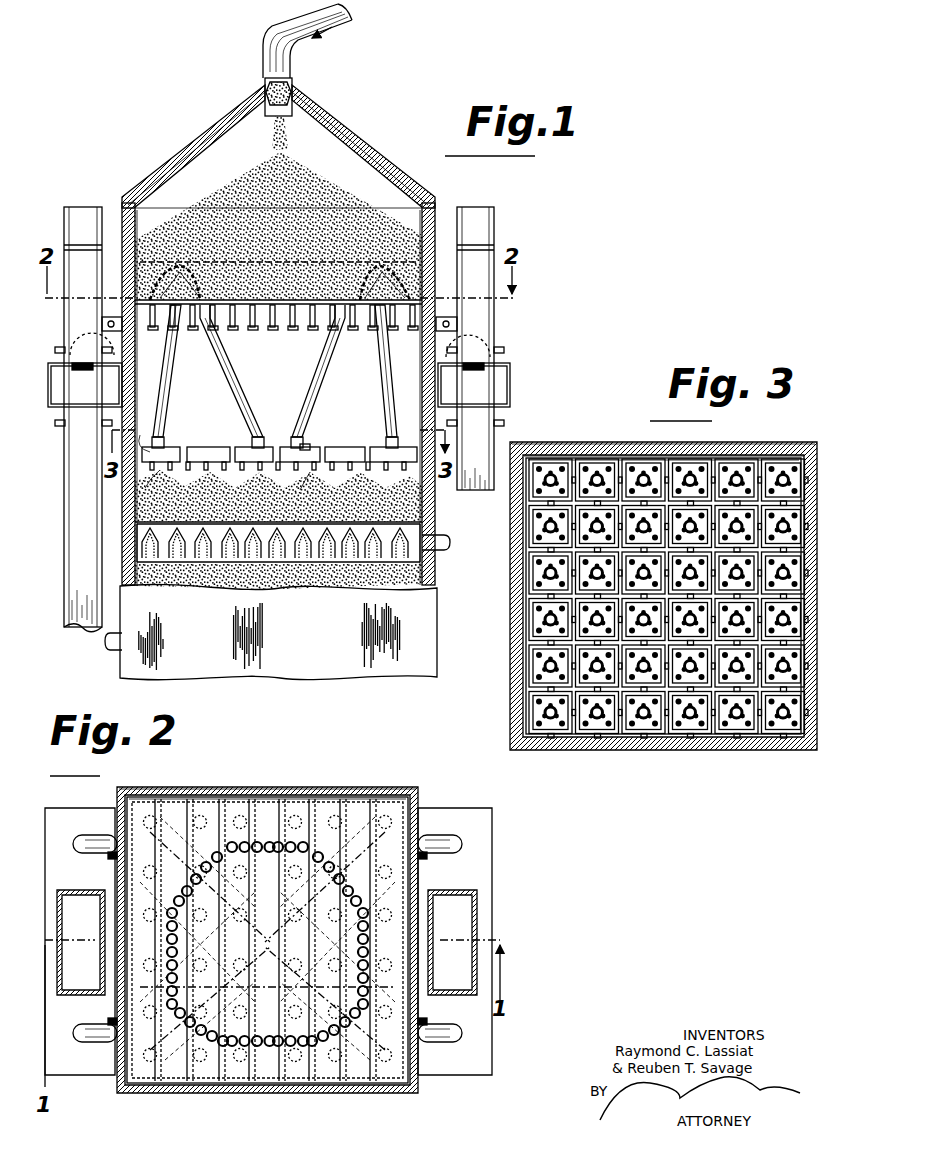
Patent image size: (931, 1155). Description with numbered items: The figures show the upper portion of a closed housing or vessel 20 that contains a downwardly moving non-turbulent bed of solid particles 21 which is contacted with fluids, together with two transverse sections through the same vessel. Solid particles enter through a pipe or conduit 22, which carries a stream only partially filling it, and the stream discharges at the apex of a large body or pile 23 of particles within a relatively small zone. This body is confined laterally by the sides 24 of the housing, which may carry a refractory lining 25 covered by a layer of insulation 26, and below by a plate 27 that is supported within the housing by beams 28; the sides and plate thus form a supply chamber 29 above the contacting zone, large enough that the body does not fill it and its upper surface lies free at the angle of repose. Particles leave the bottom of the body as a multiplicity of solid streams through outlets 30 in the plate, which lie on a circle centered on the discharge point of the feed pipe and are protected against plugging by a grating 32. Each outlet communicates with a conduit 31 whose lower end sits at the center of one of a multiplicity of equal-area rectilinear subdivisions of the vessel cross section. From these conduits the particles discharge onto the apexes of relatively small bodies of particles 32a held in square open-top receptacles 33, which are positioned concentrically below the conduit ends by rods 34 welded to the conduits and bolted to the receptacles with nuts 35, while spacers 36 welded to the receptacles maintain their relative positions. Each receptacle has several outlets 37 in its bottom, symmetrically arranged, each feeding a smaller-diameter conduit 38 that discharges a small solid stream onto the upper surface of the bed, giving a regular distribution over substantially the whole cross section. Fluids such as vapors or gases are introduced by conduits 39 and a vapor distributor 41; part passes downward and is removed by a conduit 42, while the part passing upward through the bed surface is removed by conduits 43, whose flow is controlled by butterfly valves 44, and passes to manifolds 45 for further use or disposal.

In FIG. 1, the housing 20 is at (304, 630).
In FIG. 3, the housing 20 is at (814, 437).
In FIG. 2, the housing 20 is at (325, 1096).
In FIG. 1, the bed of solid particles 21 is at (405, 506).
In FIG. 3, the bed of solid particles 21 is at (530, 500).
In FIG. 1, the conduit 22 is at (292, 36).
In FIG. 1, the body of solid particles 23 is at (222, 192).
In FIG. 1, the sides 24 is at (436, 218).
In FIG. 3, the sides 24 is at (592, 437).
In FIG. 2, the sides 24 is at (180, 800).
In FIG. 1, the refractory lining 25 is at (436, 212).
In FIG. 3, the refractory lining 25 is at (632, 437).
In FIG. 2, the refractory lining 25 is at (148, 800).
In FIG. 1, the layer of insulation 26 is at (436, 240).
In FIG. 3, the layer of insulation 26 is at (552, 448).
In FIG. 2, the layer of insulation 26 is at (212, 800).
In FIG. 1, the plate 27 is at (245, 302).
In FIG. 2, the plate 27 is at (246, 938).
In FIG. 1, the beams 28 is at (168, 332).
In FIG. 2, the beams 28 is at (375, 807).
In FIG. 1, the supply chamber 29 is at (330, 162).
In FIG. 1, the outlets 30 is at (172, 290).
In FIG. 2, the outlets 30 is at (300, 842).
In FIG. 1, the conduits 31 is at (205, 332).
In FIG. 3, the conduits 31 is at (644, 624).
In FIG. 2, the conduits 31 is at (260, 914).
In FIG. 1, the grating 32 is at (178, 268).
In FIG. 2, the grating 32 is at (228, 1087).
In FIG. 1, the small bodies of particles 32a is at (252, 450).
In FIG. 1, the receptacles 33 is at (195, 450).
In FIG. 3, the receptacles 33 is at (644, 624).
In FIG. 1, the rods 34 is at (158, 437).
In FIG. 3, the rods 34 is at (644, 624).
In FIG. 2, the rods 34 is at (268, 939).
In FIG. 1, the nuts 35 is at (178, 478).
In FIG. 1, the spacers 36 is at (268, 478).
In FIG. 3, the spacers 36 is at (545, 600).
In FIG. 3, the outlets 37 is at (644, 624).
In FIG. 1, the conduits 38 is at (322, 480).
In FIG. 3, the conduits 38 is at (644, 624).
In FIG. 1, the conduits 39 is at (444, 552).
In FIG. 1, the vapor distributor 41 is at (345, 558).
In FIG. 1, the conduit 42 is at (108, 644).
In FIG. 1, the conduits 43 is at (85, 330).
In FIG. 2, the conduits 43 is at (98, 830).
In FIG. 1, the butterfly valves 44 is at (110, 315).
In FIG. 2, the butterfly valves 44 is at (110, 856).
In FIG. 1, the manifolds 45 is at (110, 192).
In FIG. 2, the manifolds 45 is at (70, 892).